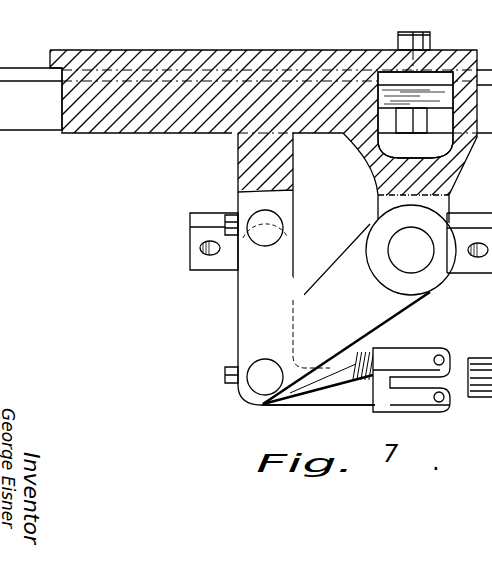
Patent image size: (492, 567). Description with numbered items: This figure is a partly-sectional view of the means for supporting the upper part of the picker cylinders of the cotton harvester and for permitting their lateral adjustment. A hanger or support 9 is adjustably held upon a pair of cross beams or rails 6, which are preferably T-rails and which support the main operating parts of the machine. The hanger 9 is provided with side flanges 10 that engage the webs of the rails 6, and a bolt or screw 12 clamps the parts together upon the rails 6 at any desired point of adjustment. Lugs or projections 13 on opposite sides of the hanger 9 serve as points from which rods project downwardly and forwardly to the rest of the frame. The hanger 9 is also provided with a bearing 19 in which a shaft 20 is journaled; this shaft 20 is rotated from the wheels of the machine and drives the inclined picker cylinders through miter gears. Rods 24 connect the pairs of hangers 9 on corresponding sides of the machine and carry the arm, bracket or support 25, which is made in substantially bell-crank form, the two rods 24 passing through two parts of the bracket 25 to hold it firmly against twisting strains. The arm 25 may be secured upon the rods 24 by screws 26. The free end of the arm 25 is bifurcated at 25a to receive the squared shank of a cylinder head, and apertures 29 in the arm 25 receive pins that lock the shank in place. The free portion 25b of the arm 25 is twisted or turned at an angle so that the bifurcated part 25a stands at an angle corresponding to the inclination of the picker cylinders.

The beams or rails 6 is at (246, 100).
The hangers or supports 9 is at (246, 222).
The side flanges 10 is at (420, 100).
The bolt or screw 12 is at (431, 47).
The lugs or projections 13 is at (322, 255).
The bearings 19 is at (411, 250).
The shafts 20 is at (411, 250).
The rods 24 is at (265, 302).
The arms, brackets or supports 25 is at (318, 395).
The bifurcated parts 25a is at (411, 380).
The free portions 25b is at (348, 372).
The screws 26 is at (228, 215).
The apertures 29 is at (443, 359).